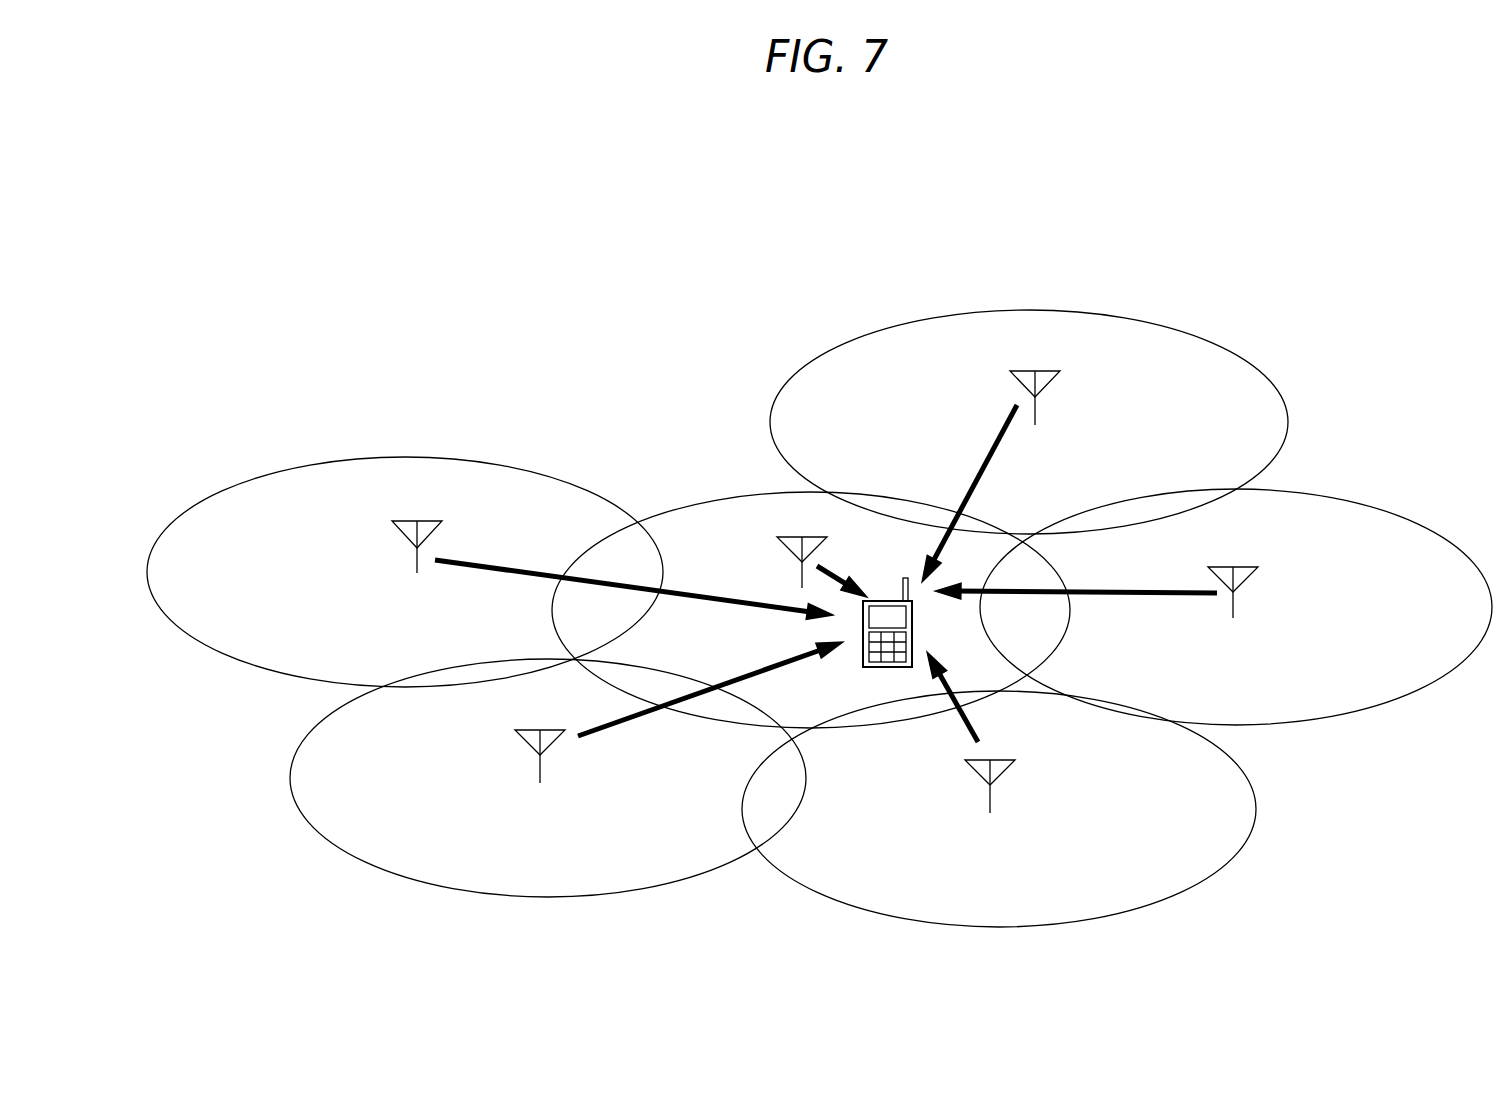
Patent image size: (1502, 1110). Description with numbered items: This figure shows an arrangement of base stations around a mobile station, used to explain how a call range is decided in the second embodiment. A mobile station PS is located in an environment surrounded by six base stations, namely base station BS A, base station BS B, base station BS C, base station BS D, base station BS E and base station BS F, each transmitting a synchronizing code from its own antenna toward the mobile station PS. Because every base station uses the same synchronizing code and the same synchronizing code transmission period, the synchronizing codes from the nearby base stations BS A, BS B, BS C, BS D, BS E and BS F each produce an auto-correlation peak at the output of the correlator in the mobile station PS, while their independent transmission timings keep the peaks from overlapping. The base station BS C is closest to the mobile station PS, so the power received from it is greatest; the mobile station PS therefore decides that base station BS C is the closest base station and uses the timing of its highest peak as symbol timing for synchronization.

The base station A BS A is at (1029, 446).
The base station B BS B is at (490, 572).
The base station C BS C is at (811, 610).
The base station D BS D is at (1213, 607).
The base station E BS E is at (566, 769).
The base station F BS F is at (999, 789).
The mobile station PS is at (887, 640).